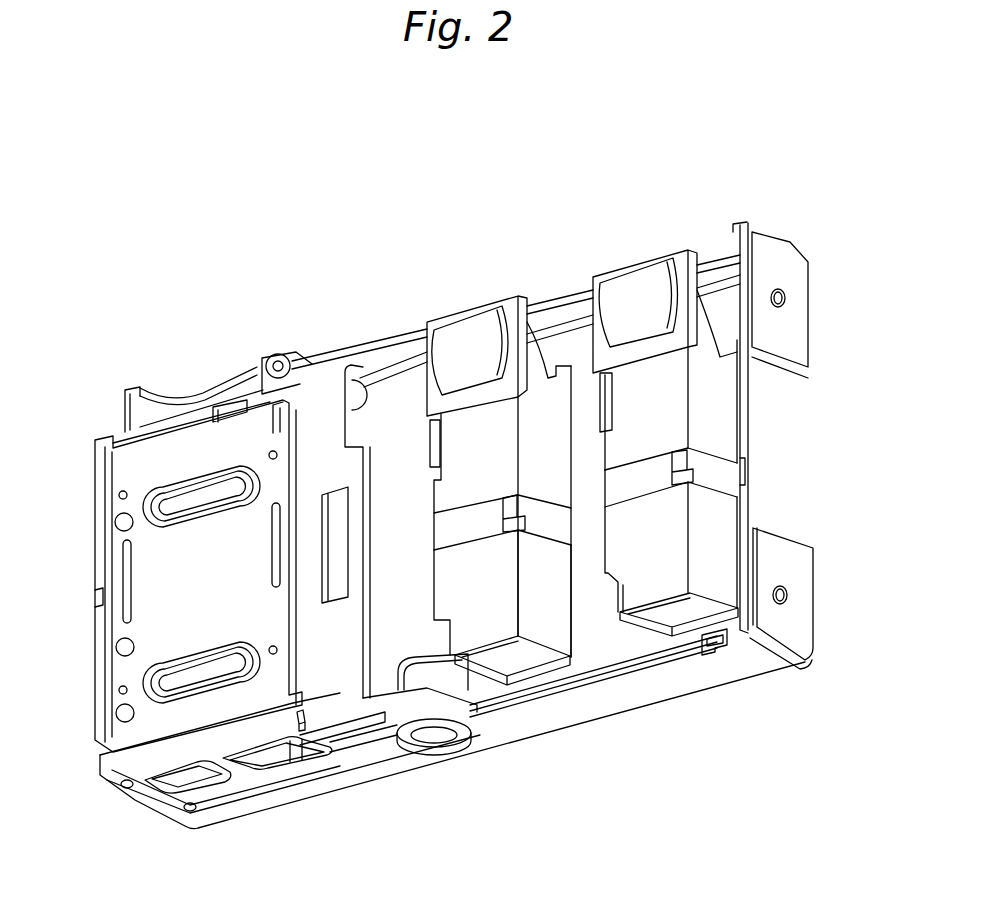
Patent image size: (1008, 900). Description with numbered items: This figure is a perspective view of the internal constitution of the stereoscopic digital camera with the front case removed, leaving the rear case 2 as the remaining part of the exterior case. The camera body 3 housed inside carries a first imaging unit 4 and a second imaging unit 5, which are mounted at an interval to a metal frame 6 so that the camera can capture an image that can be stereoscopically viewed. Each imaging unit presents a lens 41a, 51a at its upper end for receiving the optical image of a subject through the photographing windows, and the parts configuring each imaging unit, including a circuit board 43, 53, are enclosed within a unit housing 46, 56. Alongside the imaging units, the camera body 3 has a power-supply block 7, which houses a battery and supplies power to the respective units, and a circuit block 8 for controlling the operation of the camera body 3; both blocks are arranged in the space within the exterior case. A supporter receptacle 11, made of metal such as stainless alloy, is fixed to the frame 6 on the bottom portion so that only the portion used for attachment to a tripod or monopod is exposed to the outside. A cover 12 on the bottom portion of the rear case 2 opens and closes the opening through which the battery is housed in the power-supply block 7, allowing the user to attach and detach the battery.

The rear case 2 is at (787, 257).
The camera body 3 is at (338, 354).
The first imaging unit 4 is at (670, 421).
The second imaging unit 5 is at (450, 440).
The frame 6 is at (632, 650).
The power-supply block 7 is at (142, 607).
The circuit block 8 is at (705, 657).
The supporter receptacle 11 is at (462, 742).
The cover 12 is at (253, 783).
The lens 41a is at (637, 281).
The circuit board 43 is at (662, 624).
The unit housing 46 is at (678, 516).
The lens 51a is at (467, 328).
The circuit board 53 is at (505, 665).
The unit housing 56 is at (562, 628).